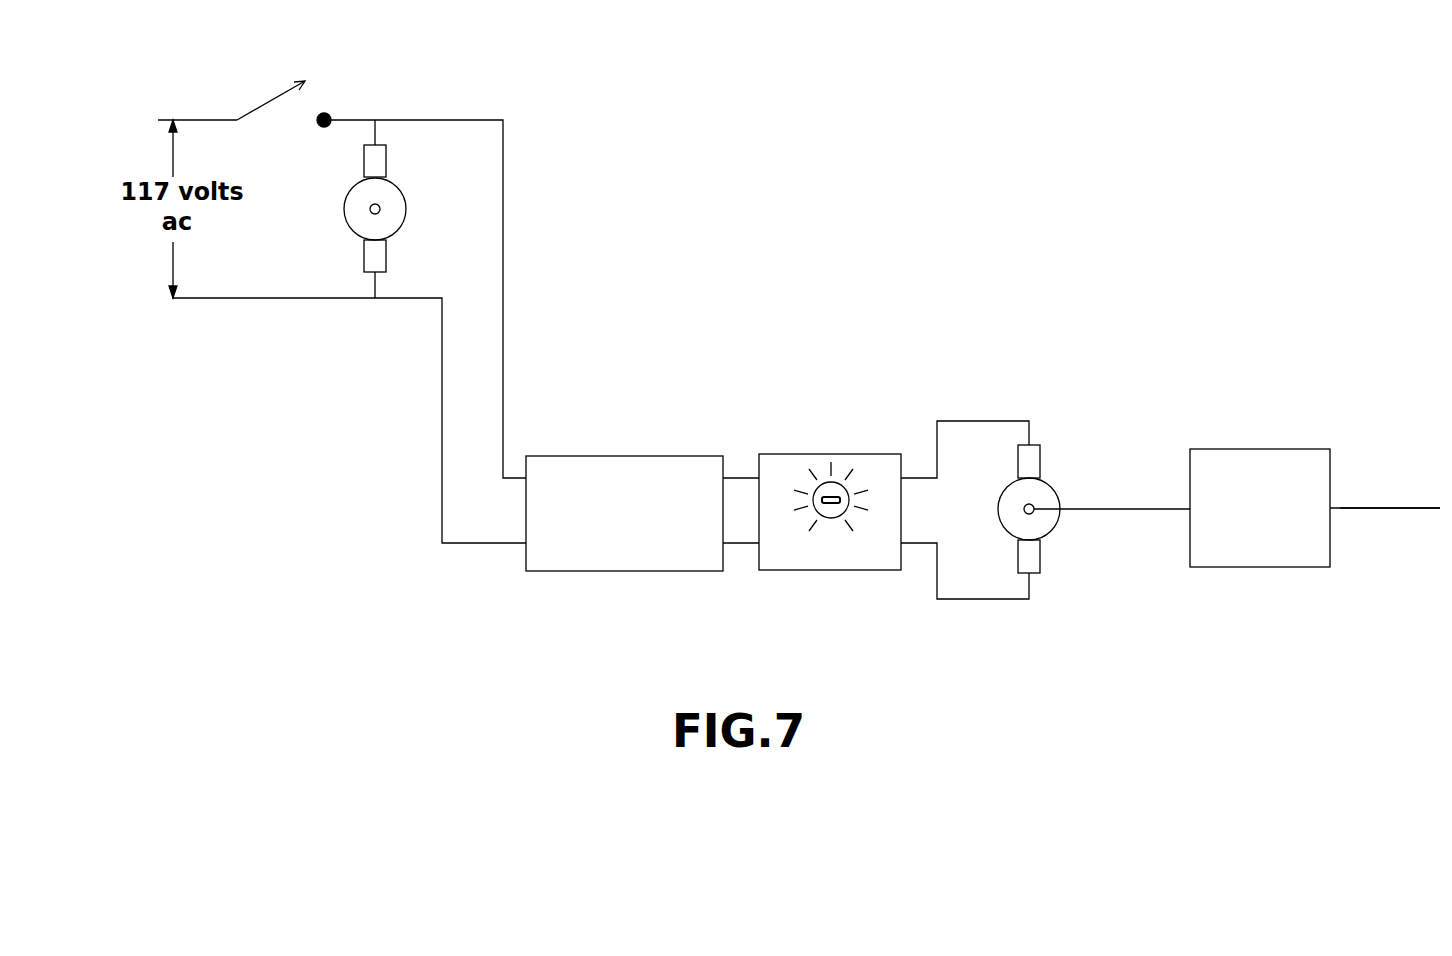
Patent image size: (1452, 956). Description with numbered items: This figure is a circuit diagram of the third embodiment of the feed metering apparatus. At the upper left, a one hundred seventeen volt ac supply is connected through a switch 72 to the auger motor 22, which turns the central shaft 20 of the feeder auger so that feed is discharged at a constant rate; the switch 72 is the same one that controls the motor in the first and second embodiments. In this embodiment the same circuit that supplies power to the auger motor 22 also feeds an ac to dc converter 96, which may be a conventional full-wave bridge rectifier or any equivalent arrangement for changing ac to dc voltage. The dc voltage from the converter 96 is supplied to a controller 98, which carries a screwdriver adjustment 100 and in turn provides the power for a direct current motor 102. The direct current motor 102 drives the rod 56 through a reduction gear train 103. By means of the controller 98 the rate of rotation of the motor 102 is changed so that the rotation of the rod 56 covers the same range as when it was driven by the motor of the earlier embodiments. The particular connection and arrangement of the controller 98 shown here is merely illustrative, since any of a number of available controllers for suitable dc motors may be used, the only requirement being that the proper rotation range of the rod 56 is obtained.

The switch 72 is at (248, 93).
The auger motor 22 is at (411, 160).
The central shaft 20 is at (396, 202).
The ac to dc converter 96 is at (639, 444).
The controller 98 is at (837, 441).
The screwdriver adjustment 100 is at (829, 545).
The direct current motor 102 is at (1051, 430).
The reduction gear train 103 is at (1251, 580).
The rod 56 is at (1388, 494).